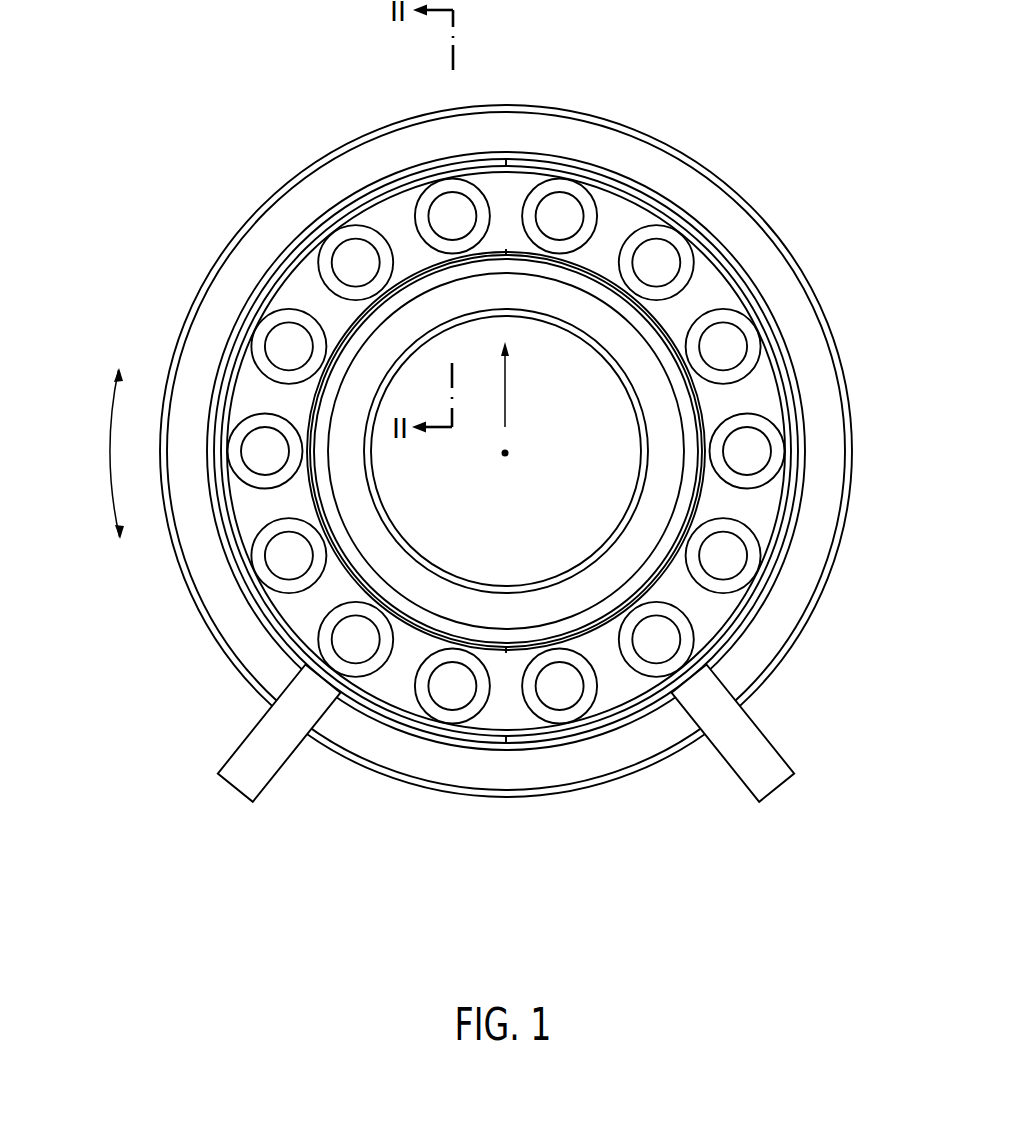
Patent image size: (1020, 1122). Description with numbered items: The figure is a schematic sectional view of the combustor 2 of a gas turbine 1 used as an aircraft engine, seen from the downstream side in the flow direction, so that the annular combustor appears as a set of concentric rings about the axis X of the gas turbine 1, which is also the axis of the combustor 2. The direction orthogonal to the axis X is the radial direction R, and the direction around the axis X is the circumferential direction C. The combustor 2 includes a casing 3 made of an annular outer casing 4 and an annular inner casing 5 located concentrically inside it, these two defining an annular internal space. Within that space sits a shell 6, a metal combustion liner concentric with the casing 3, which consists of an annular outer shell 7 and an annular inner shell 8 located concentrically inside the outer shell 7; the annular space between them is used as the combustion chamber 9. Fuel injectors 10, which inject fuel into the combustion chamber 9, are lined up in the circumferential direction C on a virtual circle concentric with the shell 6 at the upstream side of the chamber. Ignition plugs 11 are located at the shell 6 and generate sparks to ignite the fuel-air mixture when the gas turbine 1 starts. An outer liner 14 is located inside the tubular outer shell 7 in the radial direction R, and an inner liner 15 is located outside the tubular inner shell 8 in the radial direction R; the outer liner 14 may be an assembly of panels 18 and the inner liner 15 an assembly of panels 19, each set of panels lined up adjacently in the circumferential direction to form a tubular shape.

The gas turbine 1 is at (715, 140).
The combustor 2 is at (261, 258).
The casing 3 is at (506, 527).
The outer casing 4 is at (578, 790).
The inner casing 5 is at (580, 570).
The shell 6 is at (506, 557).
The outer shell 7 is at (445, 742).
The inner shell 8 is at (413, 610).
The combustion chamber 9 is at (577, 373).
The fuel injectors 10 is at (555, 202).
The ignition plugs 11 is at (250, 732).
The outer liner 14 is at (790, 500).
The inner liner 15 is at (693, 390).
The panels 18 is at (267, 622).
The panels 19 is at (657, 323).
The circumferential direction C is at (110, 446).
The radial direction R is at (508, 387).
The axis X is at (508, 452).